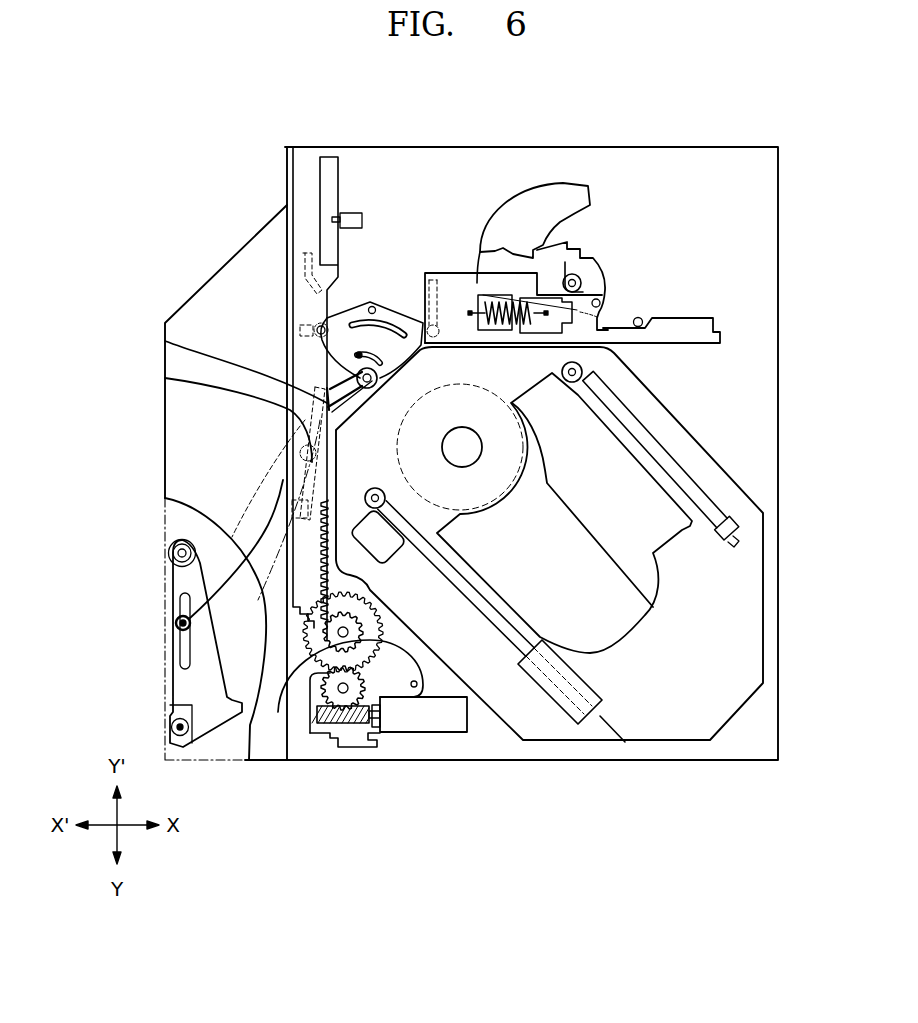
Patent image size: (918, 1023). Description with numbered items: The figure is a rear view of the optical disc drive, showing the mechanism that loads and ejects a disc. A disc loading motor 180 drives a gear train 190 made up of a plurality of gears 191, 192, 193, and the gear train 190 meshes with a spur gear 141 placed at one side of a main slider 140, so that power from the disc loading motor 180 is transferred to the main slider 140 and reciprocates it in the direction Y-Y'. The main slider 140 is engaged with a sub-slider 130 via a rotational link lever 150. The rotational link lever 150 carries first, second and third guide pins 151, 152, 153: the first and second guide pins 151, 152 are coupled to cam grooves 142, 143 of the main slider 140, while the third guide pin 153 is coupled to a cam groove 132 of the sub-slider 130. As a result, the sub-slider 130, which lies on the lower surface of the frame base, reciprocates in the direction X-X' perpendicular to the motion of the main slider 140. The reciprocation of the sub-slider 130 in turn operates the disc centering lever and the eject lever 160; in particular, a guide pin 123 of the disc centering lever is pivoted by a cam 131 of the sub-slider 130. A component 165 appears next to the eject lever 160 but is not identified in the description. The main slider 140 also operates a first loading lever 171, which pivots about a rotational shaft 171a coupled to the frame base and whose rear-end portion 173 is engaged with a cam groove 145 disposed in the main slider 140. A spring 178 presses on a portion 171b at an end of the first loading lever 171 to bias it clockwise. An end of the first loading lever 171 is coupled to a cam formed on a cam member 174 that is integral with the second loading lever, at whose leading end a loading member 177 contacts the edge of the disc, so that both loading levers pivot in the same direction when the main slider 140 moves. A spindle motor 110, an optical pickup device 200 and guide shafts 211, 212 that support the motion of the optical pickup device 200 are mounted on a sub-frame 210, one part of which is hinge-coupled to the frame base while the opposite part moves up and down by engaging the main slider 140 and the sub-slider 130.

The spindle motor 110 is at (470, 457).
The guide pin 123 is at (637, 317).
The sub-slider 130 is at (460, 273).
The cam 131 is at (653, 317).
The cam groove 132 is at (433, 280).
The main slider 140 is at (300, 153).
The spur gear 141 is at (340, 572).
The cam groove 142 is at (303, 326).
The cam groove 143 is at (303, 255).
The cam groove 145 is at (297, 518).
The rotational link lever 150 is at (350, 315).
The first guide pin 151 is at (321, 331).
The second guide pin 152 is at (377, 307).
The third guide pin 153 is at (437, 338).
The eject lever 160 is at (508, 253).
The lever 165 is at (560, 263).
The first loading lever 171 is at (237, 569).
The rotational shaft 171a is at (165, 378).
The portion 171b is at (165, 341).
The rear-end portion 173 is at (298, 512).
The cam member 174 is at (185, 653).
The loading member 177 is at (180, 727).
The spring 178 is at (368, 397).
The disc loading motor 180 is at (421, 732).
The gear train 190 is at (380, 826).
The gear 191 is at (343, 640).
The gear 192 is at (278, 712).
The gear 193 is at (352, 708).
The optical pickup device 200 is at (668, 727).
The sub-frame 210 is at (687, 445).
The guide shaft 211 is at (503, 632).
The guide shaft 212 is at (655, 460).